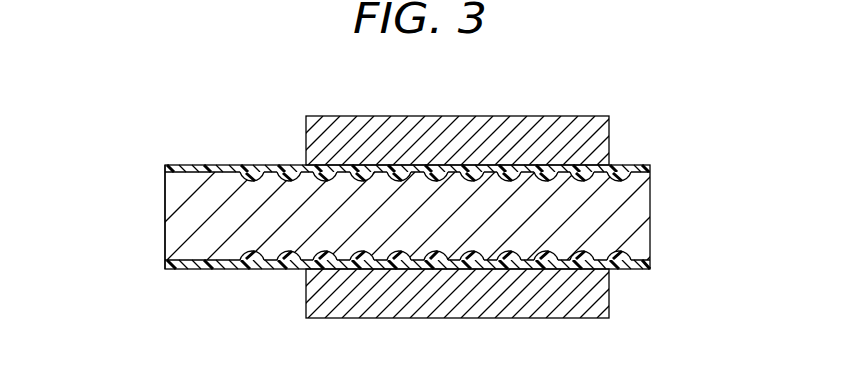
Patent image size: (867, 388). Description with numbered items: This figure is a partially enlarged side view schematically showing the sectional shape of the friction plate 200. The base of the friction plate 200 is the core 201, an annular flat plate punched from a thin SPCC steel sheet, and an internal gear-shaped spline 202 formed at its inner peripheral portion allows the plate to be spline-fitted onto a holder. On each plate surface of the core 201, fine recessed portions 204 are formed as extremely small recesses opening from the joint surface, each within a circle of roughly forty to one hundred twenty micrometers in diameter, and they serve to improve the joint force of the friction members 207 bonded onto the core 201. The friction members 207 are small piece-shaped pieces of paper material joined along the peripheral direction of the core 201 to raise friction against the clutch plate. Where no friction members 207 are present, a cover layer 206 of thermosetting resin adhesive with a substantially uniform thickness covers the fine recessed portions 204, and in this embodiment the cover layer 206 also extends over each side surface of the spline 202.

The friction plate 200 is at (141, 73).
The core 201 is at (652, 214).
The spline 202 is at (165, 215).
The fine recessed portion 204 is at (632, 166).
The cover layer 206 is at (222, 165).
The friction member 207 is at (458, 116).